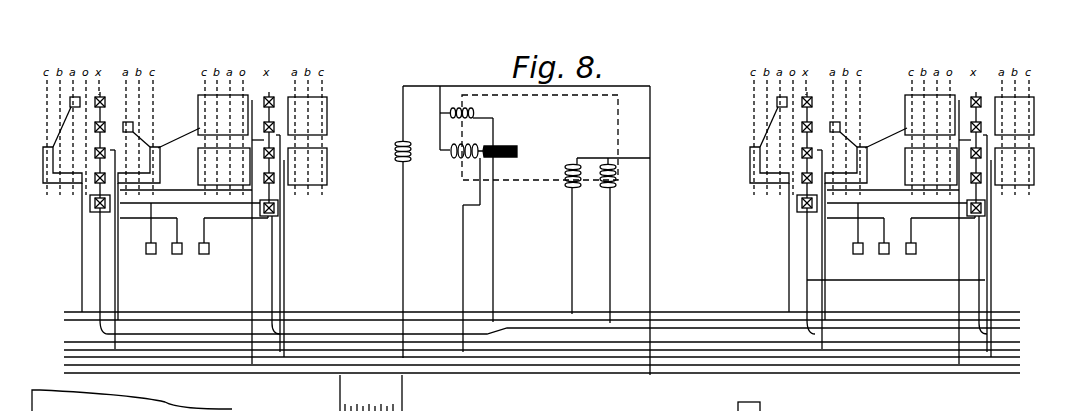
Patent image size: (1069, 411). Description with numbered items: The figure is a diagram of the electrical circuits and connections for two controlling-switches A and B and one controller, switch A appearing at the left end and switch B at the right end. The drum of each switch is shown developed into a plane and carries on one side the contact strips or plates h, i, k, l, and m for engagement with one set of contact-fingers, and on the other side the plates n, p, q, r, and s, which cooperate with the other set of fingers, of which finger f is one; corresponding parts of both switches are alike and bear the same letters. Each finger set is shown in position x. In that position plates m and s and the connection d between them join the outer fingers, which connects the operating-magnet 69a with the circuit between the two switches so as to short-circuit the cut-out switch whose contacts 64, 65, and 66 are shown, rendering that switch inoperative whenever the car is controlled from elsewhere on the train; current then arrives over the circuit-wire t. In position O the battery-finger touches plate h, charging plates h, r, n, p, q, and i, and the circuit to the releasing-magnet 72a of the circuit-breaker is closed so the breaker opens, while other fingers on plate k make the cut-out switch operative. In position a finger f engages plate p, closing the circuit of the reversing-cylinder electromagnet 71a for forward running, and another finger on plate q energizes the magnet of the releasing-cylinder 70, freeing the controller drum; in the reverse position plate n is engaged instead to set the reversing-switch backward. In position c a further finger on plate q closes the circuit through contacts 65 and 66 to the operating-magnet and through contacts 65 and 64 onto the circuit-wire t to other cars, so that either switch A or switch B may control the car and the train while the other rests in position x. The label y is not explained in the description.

The cut-out switch contact 64 is at (148, 238).
The cut-out switch contact 65 is at (176, 245).
The cut-out switch contact 66 is at (203, 245).
The operating-magnet 69a is at (469, 210).
The releasing-cylinder 70 is at (478, 248).
The reversing-cylinder electromagnet 71a is at (607, 231).
The releasing-magnet of the circuit-breaker 72a is at (386, 222).
The contact plate p is at (66, 118).
The contact plate n is at (136, 134).
The contact plate q is at (55, 165).
The contact plate r is at (159, 155).
The contact plate s is at (92, 206).
The contact strip m is at (278, 208).
The connection d is at (190, 196).
The contact strip h is at (223, 115).
The contact strip k is at (224, 166).
The contact strip i is at (307, 116).
The contact strip l is at (307, 166).
The contact y is at (101, 95).
The contact-finger f is at (101, 152).
The circuit-wire t is at (535, 342).
The controlling-switch A is at (175, 288).
The controlling-switch B is at (886, 292).